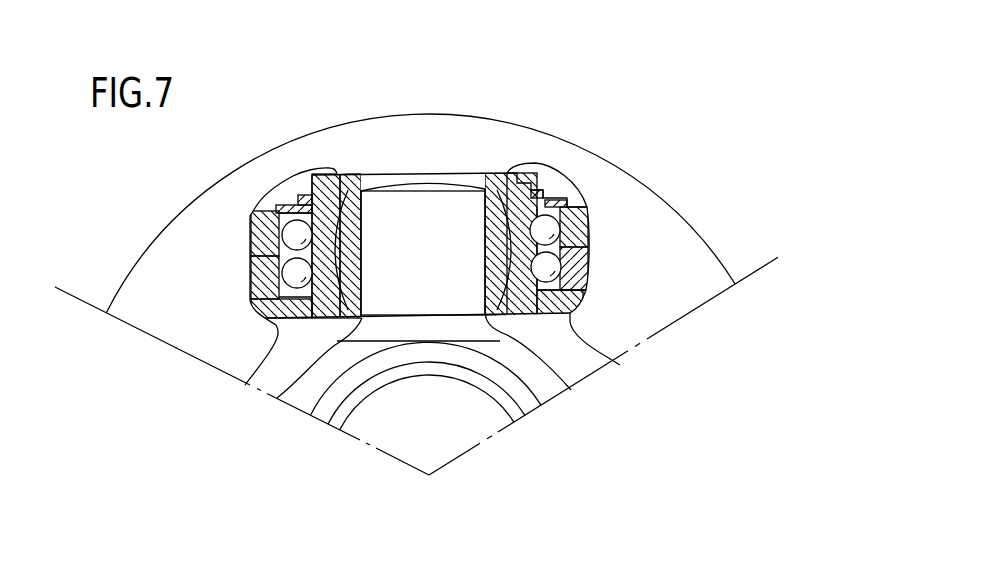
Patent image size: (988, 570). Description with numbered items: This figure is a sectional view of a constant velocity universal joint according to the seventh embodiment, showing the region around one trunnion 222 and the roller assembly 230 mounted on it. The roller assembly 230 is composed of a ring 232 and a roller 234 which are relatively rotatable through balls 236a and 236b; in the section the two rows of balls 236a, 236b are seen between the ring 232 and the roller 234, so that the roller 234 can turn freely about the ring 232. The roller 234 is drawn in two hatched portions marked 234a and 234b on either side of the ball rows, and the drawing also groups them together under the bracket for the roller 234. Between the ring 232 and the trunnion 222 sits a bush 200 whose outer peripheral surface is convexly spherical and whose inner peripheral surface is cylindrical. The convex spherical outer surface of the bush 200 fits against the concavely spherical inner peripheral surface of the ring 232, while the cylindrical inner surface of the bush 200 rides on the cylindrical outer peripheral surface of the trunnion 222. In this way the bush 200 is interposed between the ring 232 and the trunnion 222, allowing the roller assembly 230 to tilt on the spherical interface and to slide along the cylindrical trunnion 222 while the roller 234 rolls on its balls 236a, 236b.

The bush 200 is at (498, 212).
The trunnion 222 is at (442, 268).
The roller assembly 230 is at (653, 183).
The ring 232 is at (518, 180).
The roller 234 is at (691, 202).
The lower outer ring portion 234a is at (585, 271).
The upper outer ring portion 234b is at (585, 232).
The ball 236a is at (575, 280).
The ball 236b is at (584, 227).